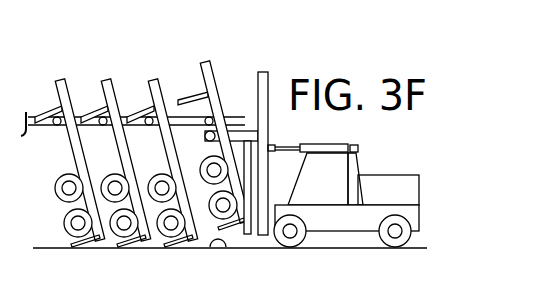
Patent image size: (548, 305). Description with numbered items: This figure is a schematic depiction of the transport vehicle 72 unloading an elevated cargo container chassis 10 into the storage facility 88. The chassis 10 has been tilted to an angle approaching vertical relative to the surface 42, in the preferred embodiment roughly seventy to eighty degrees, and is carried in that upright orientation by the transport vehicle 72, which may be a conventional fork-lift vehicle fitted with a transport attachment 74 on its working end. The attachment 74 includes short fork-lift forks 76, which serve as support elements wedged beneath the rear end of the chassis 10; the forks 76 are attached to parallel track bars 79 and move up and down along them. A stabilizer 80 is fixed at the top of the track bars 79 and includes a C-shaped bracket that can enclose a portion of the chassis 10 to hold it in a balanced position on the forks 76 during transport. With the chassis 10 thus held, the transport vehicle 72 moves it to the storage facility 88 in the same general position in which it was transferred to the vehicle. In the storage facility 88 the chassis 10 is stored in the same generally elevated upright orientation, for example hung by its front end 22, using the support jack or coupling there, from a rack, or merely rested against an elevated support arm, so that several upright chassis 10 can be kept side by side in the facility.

The cargo container chassis 10 is at (61, 72).
The front end 22 is at (67, 90).
The surface 42 is at (211, 242).
The transport vehicle 72 is at (361, 163).
The transport attachment 74 is at (248, 122).
The fork-lift forks 76 is at (239, 223).
The track bars 79 is at (258, 183).
The stabilizer 80 is at (233, 140).
The storage facility 88 is at (43, 127).